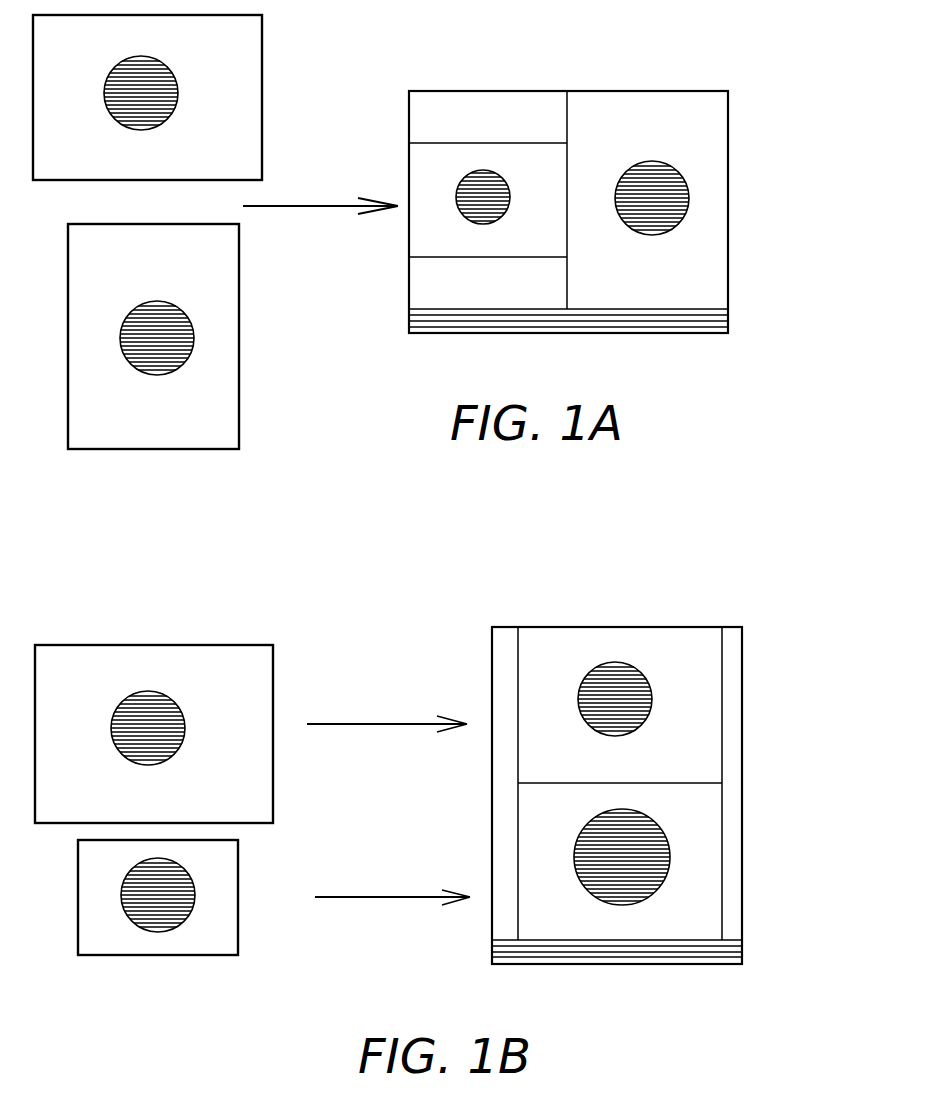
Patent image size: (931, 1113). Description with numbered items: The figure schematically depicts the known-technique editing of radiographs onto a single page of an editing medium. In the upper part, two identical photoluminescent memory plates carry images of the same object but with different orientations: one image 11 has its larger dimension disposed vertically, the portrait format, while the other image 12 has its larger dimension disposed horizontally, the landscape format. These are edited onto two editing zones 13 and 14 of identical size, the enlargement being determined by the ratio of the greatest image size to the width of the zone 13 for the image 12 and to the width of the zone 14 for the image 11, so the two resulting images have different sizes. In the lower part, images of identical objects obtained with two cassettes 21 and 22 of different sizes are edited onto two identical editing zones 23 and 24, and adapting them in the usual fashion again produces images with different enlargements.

In FIG. 1A, the portrait format image 11 is at (222, 412).
In FIG. 1A, the landscape format image 12 is at (247, 68).
In FIG. 1A, the editing zone 13 is at (425, 102).
In FIG. 1A, the editing zone 14 is at (615, 112).
In FIG. 1B, the cassette 21 is at (225, 883).
In FIG. 1B, the cassette 22 is at (250, 677).
In FIG. 1B, the editing zone 23 is at (708, 908).
In FIG. 1B, the editing zone 24 is at (700, 682).